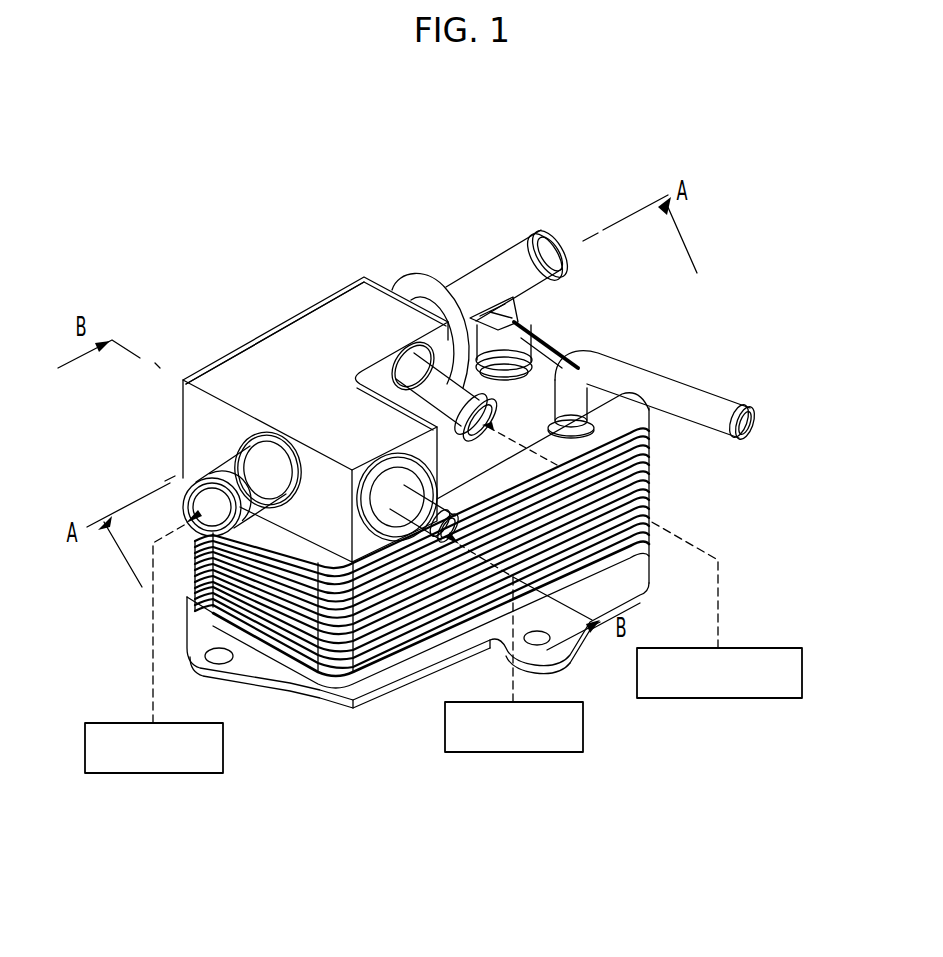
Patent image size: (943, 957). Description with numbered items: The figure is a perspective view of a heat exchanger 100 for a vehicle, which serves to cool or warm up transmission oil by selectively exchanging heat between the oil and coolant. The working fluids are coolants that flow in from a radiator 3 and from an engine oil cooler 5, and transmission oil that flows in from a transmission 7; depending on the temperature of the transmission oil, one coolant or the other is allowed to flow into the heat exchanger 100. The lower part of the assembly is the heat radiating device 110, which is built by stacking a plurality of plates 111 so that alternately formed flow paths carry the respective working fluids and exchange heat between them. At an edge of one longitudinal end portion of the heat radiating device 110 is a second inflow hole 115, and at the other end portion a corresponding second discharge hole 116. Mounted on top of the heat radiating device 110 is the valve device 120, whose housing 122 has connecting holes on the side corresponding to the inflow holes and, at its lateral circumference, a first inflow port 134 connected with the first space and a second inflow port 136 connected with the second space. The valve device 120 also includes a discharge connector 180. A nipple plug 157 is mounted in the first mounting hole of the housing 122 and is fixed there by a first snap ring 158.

The heat exchanger 100 is at (388, 145).
The heat radiating device 110 is at (471, 550).
The plates 111 is at (643, 452).
The second inflow hole 115 is at (578, 388).
The second discharge hole 116 is at (497, 346).
The valve device 120 is at (334, 284).
The housing 122 is at (303, 318).
The first inflow port 134 is at (233, 470).
The second inflow port 136 is at (428, 383).
The nipple plug 157 is at (390, 530).
The first snap ring 158 is at (422, 531).
The discharge connector 180 is at (492, 268).
The radiator 3 is at (153, 773).
The engine oil cooler 5 is at (718, 698).
The transmission 7 is at (513, 752).